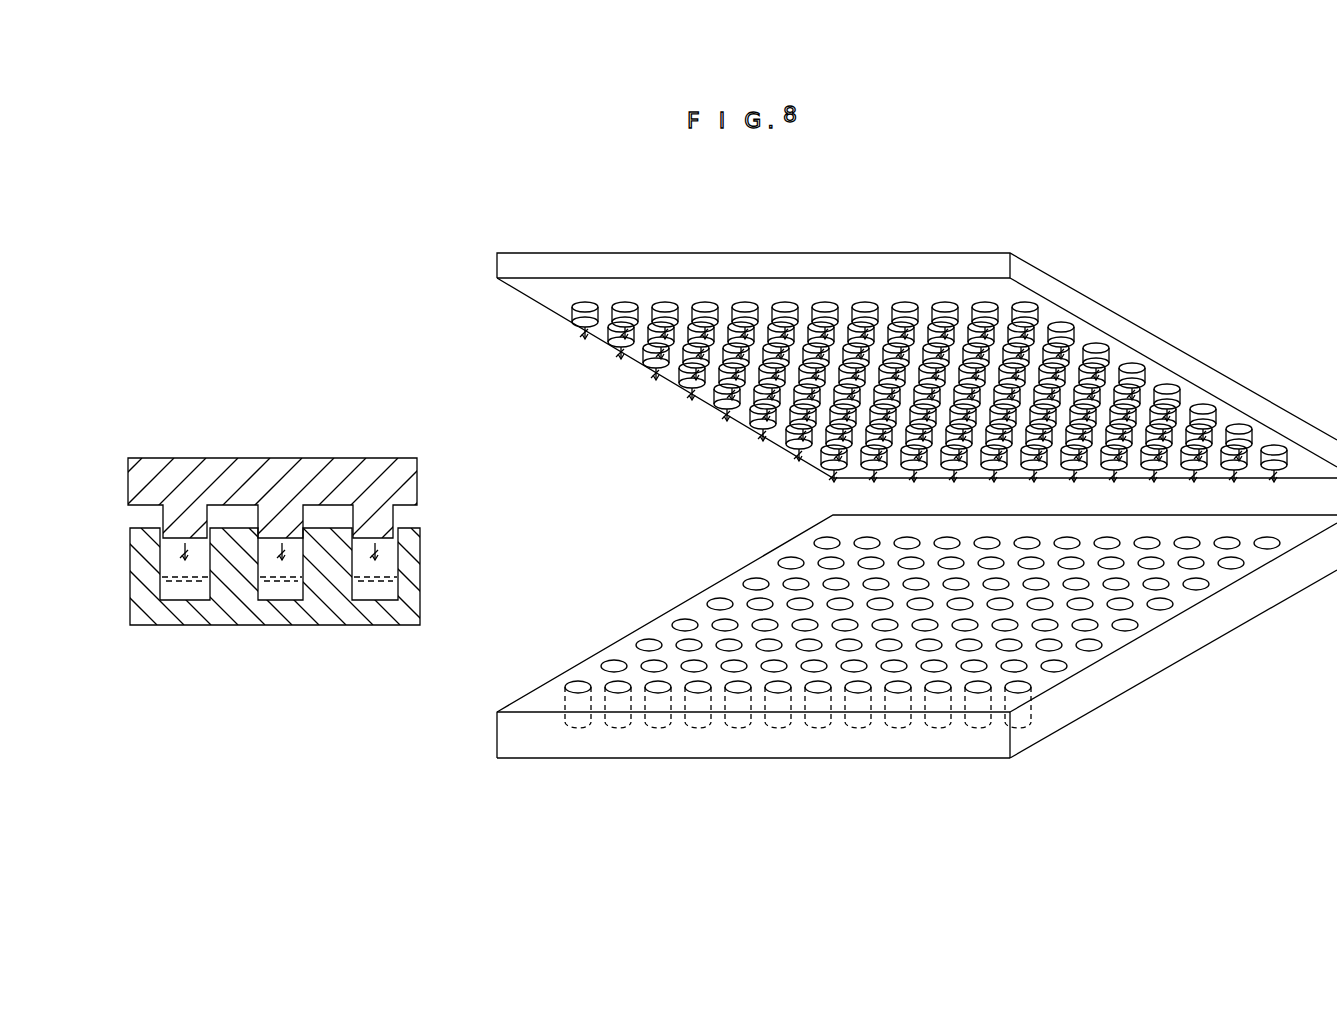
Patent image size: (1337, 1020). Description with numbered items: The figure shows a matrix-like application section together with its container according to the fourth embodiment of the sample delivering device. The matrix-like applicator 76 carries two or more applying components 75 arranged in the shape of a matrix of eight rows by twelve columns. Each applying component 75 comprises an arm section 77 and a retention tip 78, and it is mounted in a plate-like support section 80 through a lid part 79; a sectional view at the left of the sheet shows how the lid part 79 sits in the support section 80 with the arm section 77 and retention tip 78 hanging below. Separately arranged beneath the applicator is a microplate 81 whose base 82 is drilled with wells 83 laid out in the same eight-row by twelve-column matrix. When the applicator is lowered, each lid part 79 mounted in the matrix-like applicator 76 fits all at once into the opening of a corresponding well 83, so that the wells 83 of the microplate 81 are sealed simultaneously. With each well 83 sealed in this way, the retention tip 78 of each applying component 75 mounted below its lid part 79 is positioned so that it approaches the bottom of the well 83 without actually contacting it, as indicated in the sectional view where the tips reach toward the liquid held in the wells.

The applying component 75 is at (652, 474).
The matrix-like applicator 76 is at (357, 452).
The arm section 77 is at (187, 550).
The retention tip 78 is at (180, 582).
The lid part 79 is at (165, 512).
The plate-like support section 80 is at (223, 468).
The microplate 81 is at (302, 632).
The base 82 is at (552, 738).
The well 83 is at (393, 555).